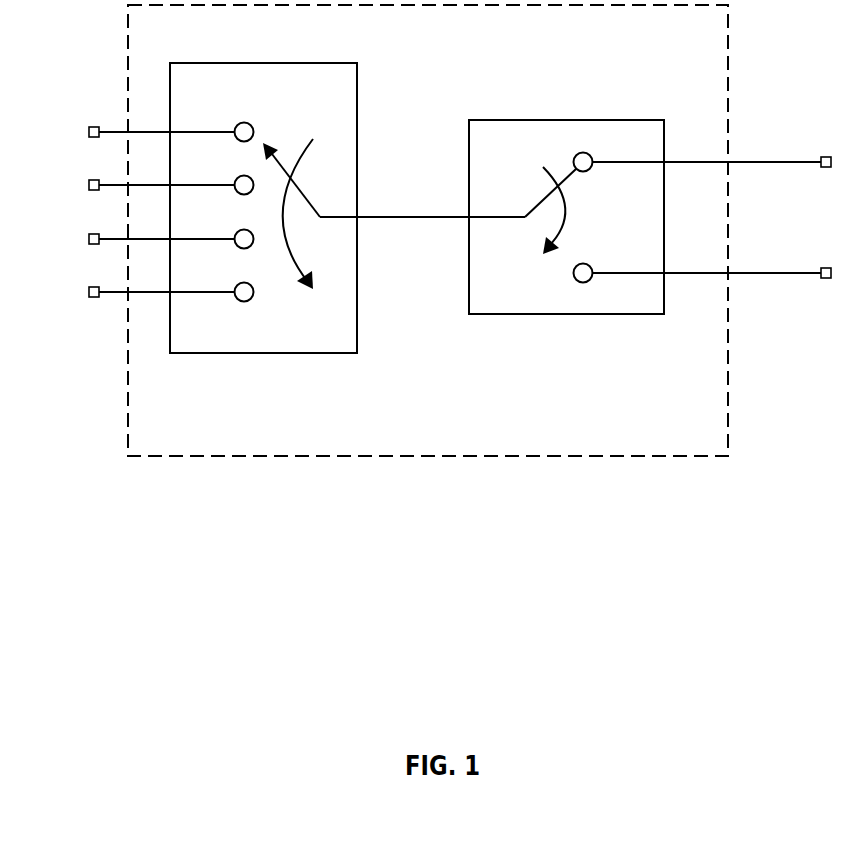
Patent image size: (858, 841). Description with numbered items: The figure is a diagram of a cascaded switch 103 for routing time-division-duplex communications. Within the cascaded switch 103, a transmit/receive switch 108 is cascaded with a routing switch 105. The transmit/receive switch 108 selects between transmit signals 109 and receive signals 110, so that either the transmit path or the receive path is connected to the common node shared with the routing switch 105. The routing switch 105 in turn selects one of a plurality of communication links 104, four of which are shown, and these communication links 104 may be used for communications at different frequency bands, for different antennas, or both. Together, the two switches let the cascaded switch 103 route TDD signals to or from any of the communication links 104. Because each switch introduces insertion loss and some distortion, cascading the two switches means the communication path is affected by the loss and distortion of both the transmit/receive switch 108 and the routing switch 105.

The cascaded switch 103 is at (428, 230).
The communication links 104 is at (136, 104).
The routing switch 105 is at (291, 63).
The transmit/receive (T/R) switch 108 is at (552, 120).
The transmit signals 109 is at (711, 144).
The receive signals 110 is at (711, 256).